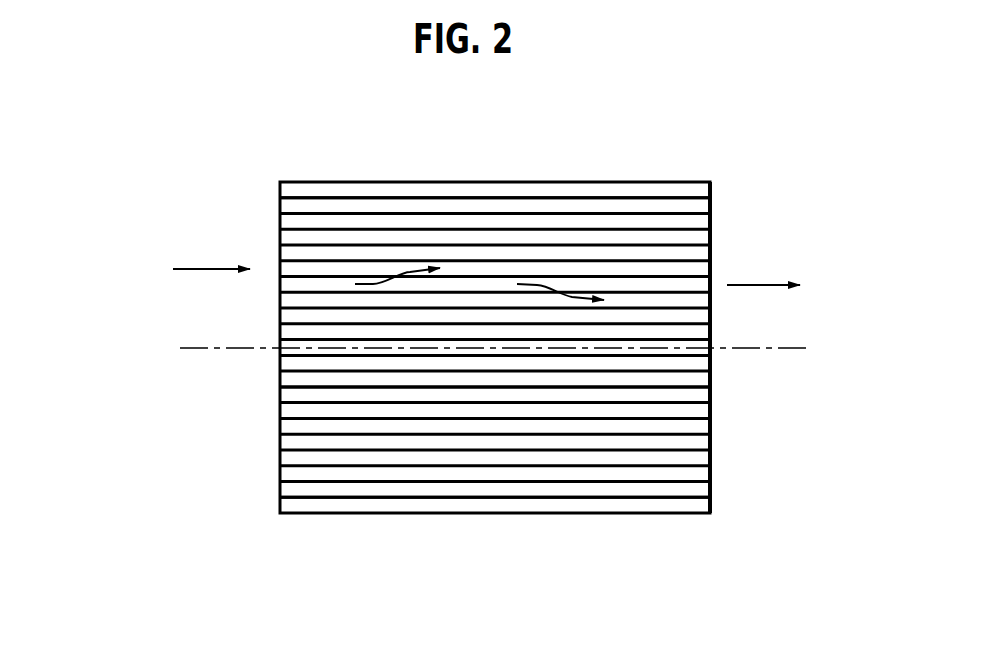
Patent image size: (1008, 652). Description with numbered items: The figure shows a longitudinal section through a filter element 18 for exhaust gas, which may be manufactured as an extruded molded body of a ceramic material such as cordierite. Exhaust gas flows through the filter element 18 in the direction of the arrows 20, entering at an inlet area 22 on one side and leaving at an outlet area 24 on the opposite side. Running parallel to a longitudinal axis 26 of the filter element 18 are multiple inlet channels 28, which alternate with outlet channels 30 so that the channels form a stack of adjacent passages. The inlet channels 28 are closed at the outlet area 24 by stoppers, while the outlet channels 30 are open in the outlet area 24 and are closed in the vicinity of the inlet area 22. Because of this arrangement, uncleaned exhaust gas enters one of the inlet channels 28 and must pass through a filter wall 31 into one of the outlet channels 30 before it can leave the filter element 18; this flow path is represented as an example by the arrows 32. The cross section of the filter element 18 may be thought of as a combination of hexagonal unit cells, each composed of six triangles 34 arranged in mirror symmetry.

The filter element 18 is at (740, 166).
The arrows 20 is at (205, 269).
The inlet area 22 is at (195, 461).
The outlet area 24 is at (748, 400).
The longitudinal axis 26 is at (793, 349).
The inlet channels 28 is at (298, 189).
The outlet channels 30 is at (700, 268).
The filter wall 31 is at (585, 275).
The arrows 32 is at (369, 283).
The triangles 34 is at (298, 397).